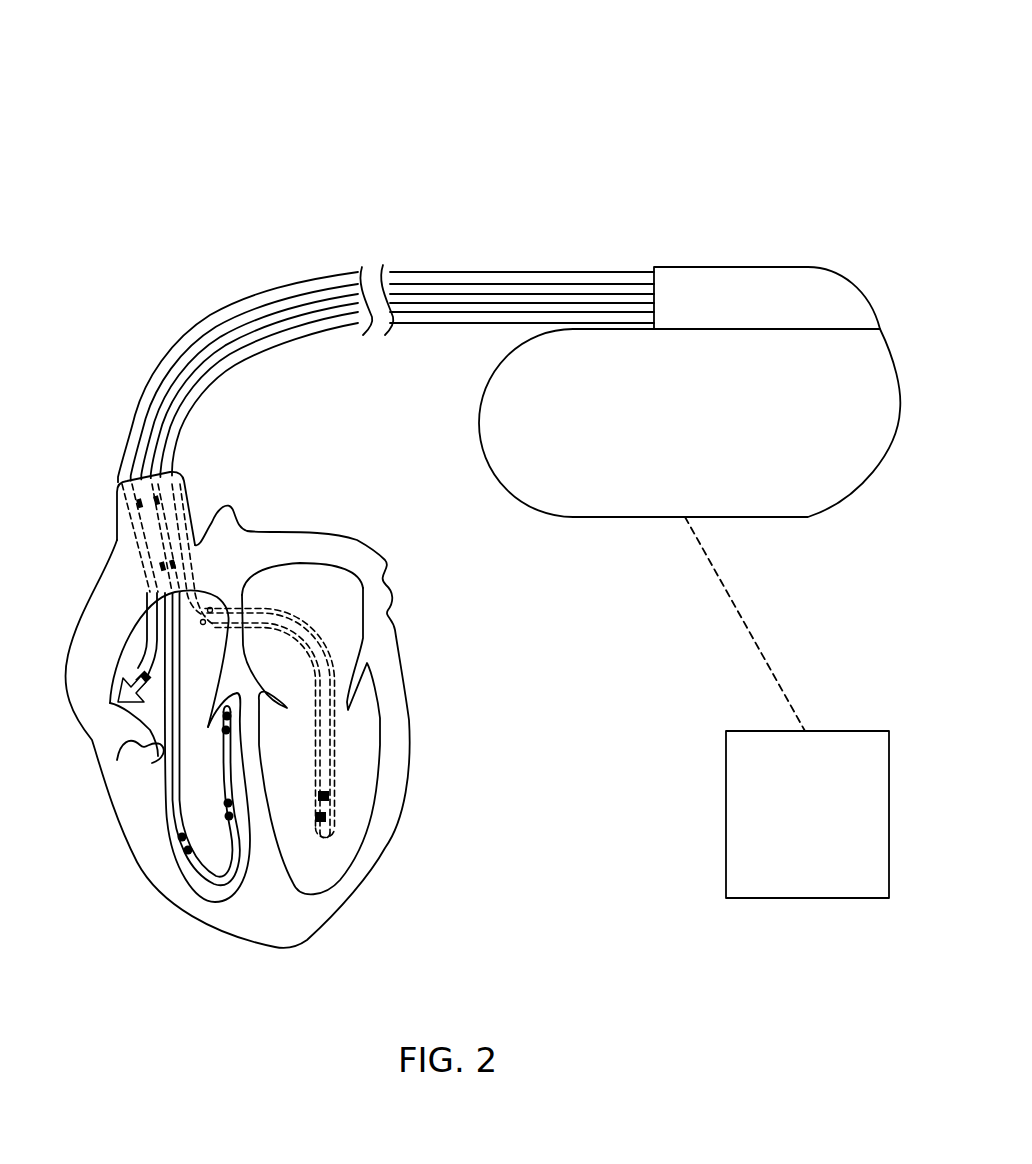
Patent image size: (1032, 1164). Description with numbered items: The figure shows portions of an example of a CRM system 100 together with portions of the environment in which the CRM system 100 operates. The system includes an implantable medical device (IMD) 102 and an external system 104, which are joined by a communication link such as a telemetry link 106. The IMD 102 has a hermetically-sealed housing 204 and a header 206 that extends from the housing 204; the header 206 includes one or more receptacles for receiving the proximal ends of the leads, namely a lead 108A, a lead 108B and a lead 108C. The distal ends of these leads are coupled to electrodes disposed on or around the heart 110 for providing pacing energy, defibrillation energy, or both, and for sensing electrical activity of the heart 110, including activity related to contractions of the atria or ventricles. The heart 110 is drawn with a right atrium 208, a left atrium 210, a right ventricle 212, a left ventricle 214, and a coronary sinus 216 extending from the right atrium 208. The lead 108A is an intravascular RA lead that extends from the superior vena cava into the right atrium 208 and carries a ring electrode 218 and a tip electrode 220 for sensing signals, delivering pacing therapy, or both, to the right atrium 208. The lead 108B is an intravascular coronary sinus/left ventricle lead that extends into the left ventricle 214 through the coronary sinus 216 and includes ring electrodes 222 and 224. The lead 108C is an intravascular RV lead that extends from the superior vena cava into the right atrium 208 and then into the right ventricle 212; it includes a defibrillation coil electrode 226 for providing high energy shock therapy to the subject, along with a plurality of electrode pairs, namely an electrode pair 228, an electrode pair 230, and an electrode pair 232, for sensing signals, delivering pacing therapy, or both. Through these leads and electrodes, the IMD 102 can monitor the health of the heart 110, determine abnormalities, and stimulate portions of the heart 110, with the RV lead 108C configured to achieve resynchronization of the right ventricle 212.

The CRM system 100 is at (784, 97).
The implantable medical device 102 is at (697, 363).
The external system 104 is at (796, 899).
The telemetry link 106 is at (742, 624).
The lead 108A is at (312, 283).
The lead 108B is at (313, 330).
The lead 108C is at (250, 318).
The heart 110 is at (403, 673).
The hermetically-sealed housing 204 is at (893, 353).
The header 206 is at (832, 273).
The right atrium 208 is at (143, 765).
The left atrium 210 is at (350, 617).
The right ventricle 212 is at (170, 760).
The left ventricle 214 is at (343, 862).
The coronary sinus 216 is at (207, 616).
The ring electrode 218 is at (140, 675).
The tip electrode 220 is at (150, 725).
The ring electrode 222 is at (327, 795).
The ring electrode 224 is at (325, 818).
The defibrillation coil electrode 226 is at (135, 508).
The electrode pair 228 is at (245, 733).
The electrode pair 230 is at (240, 805).
The electrode pair 232 is at (178, 852).